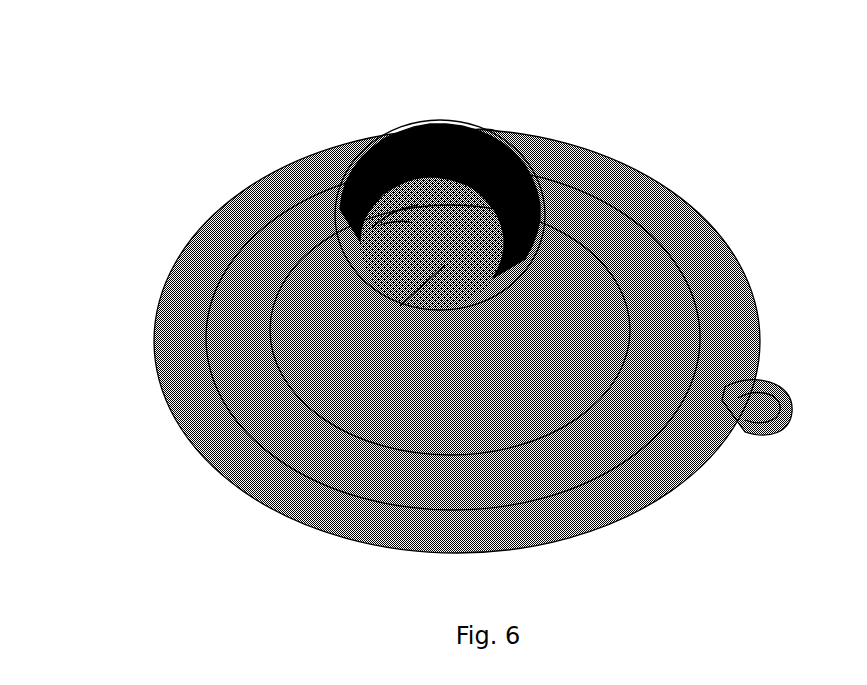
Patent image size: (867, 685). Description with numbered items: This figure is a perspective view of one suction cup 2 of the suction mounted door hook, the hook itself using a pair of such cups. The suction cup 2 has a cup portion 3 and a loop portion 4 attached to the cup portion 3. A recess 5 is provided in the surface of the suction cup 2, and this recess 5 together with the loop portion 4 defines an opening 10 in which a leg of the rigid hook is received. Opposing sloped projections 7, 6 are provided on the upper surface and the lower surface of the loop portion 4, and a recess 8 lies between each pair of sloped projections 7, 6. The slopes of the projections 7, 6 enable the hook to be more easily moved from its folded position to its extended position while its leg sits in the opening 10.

The suction cup 2 is at (253, 135).
The cup portion 3 is at (297, 200).
The loop portion 4 is at (367, 133).
The recess 5 is at (400, 308).
The sloped projection 6 is at (413, 138).
The sloped projection 7 is at (510, 188).
The recess 8 is at (480, 135).
The opening 10 is at (390, 218).